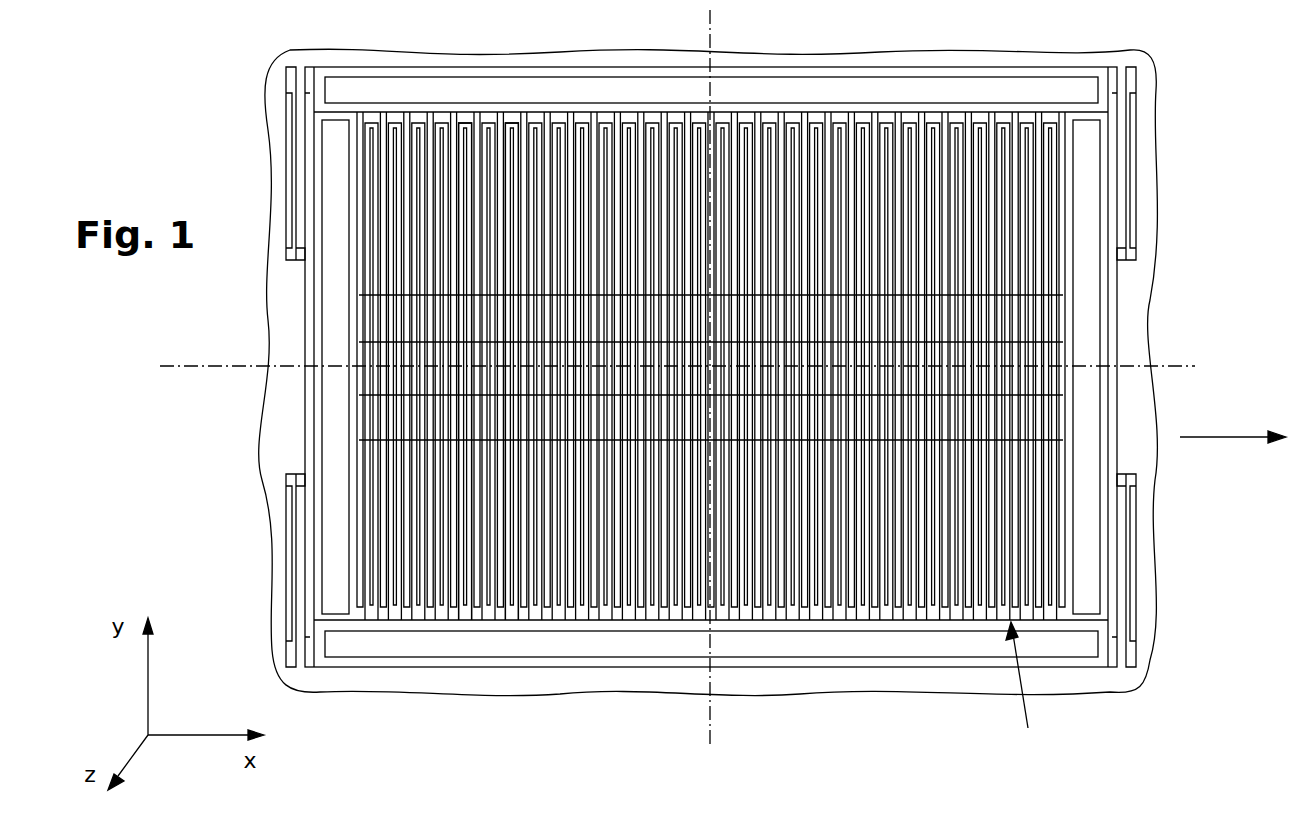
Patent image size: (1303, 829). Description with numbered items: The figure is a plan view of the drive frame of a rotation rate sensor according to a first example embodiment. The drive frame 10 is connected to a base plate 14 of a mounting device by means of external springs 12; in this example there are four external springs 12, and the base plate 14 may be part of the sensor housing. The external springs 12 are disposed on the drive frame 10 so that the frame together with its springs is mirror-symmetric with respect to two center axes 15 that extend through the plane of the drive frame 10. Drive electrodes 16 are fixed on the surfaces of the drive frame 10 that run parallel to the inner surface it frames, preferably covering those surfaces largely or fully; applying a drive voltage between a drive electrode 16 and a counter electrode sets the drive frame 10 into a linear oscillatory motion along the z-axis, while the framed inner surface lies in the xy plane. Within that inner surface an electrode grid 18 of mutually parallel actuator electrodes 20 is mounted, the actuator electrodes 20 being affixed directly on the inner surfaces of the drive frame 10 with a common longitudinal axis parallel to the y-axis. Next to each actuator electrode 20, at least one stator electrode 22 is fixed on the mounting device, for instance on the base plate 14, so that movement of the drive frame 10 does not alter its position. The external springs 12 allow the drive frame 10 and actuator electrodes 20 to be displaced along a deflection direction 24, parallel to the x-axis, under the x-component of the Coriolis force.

The drive frame 10 is at (912, 72).
The external spring 12 is at (295, 137).
The base plate 14 is at (470, 62).
The center axis 15 is at (1190, 362).
The drive electrode 16 is at (1003, 95).
The electrode grid 18 is at (1022, 688).
The actuator electrode 20 is at (510, 625).
The stator electrode 22 is at (626, 125).
The deflection direction 24 is at (1233, 411).